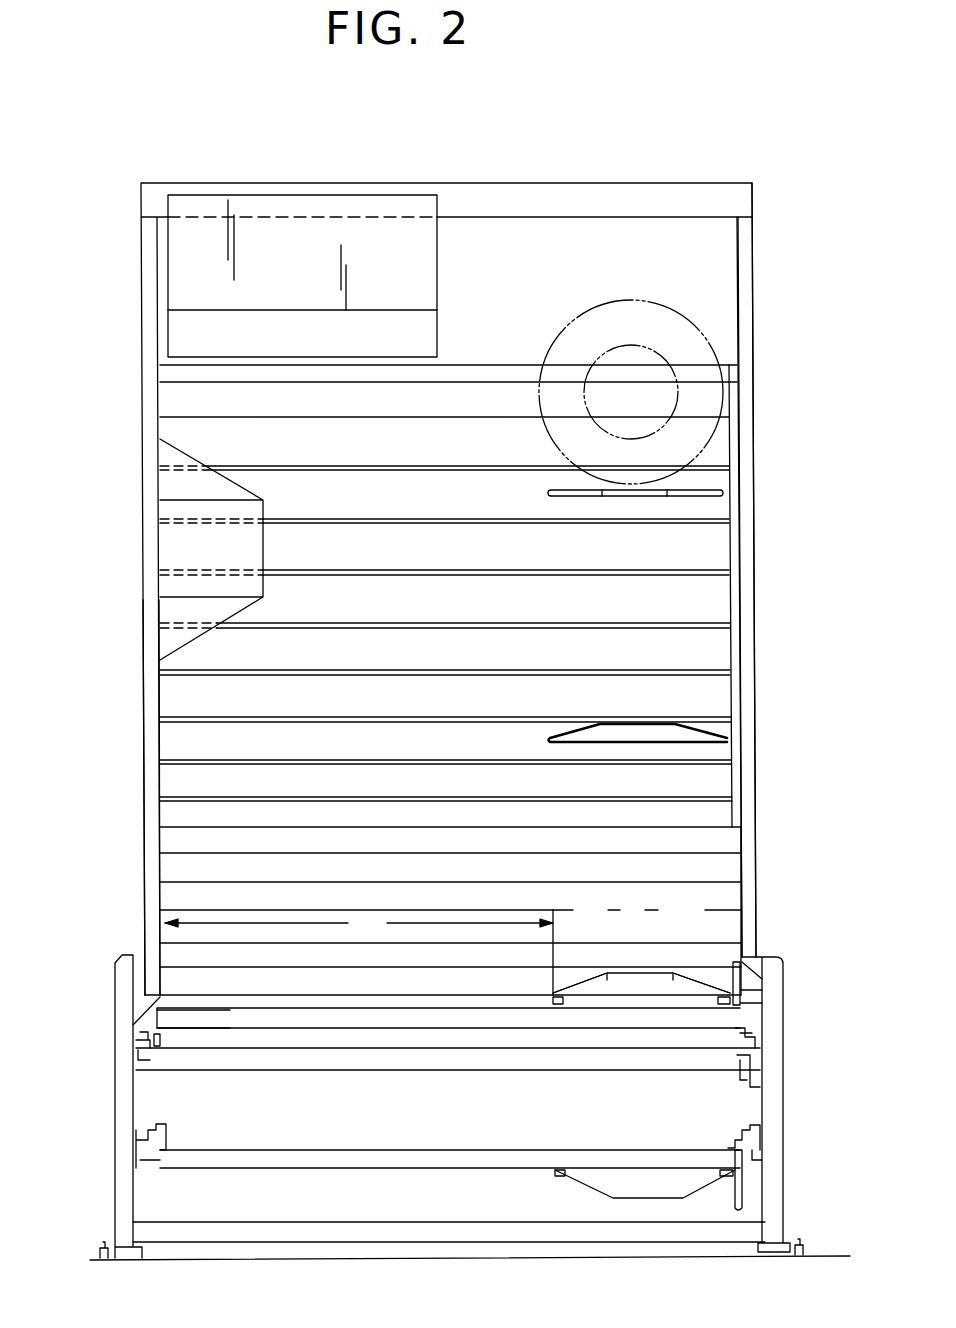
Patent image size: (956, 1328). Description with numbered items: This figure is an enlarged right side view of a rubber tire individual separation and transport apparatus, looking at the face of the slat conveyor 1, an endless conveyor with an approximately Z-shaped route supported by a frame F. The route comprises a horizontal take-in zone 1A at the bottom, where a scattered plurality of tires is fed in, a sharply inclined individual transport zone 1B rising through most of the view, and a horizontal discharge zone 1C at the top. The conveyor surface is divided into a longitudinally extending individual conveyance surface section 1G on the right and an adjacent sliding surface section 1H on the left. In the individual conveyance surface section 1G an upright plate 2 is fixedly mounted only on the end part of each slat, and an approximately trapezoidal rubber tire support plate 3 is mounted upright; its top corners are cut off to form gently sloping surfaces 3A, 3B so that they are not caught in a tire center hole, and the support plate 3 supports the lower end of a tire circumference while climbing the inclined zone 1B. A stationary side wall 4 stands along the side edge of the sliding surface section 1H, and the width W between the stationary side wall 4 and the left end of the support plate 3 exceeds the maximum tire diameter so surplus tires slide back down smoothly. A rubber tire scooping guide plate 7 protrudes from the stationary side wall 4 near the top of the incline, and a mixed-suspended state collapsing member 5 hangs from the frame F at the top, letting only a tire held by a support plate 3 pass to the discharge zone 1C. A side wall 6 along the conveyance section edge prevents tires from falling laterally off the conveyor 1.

The slat conveyor 1 is at (290, 1020).
The horizontal take-in zone 1A is at (214, 1010).
The sharply inclined individual transport zone 1B is at (173, 825).
The horizontal discharge zone 1C is at (218, 384).
The individual conveyance surface section 1G is at (722, 603).
The sliding surface section 1H is at (168, 702).
The upright plate 2 is at (740, 647).
The rubber tire support plate 3 is at (723, 487).
The gently sloping surface 3A is at (582, 982).
The gently sloping surface 3B is at (688, 978).
The stationary side wall 4 is at (148, 758).
The mixed-suspended state collapsing member 5 is at (437, 268).
The side wall 6 is at (752, 821).
The rubber tire scooping guide plate 7 is at (263, 548).
The frame F is at (462, 186).
The width W is at (359, 952).